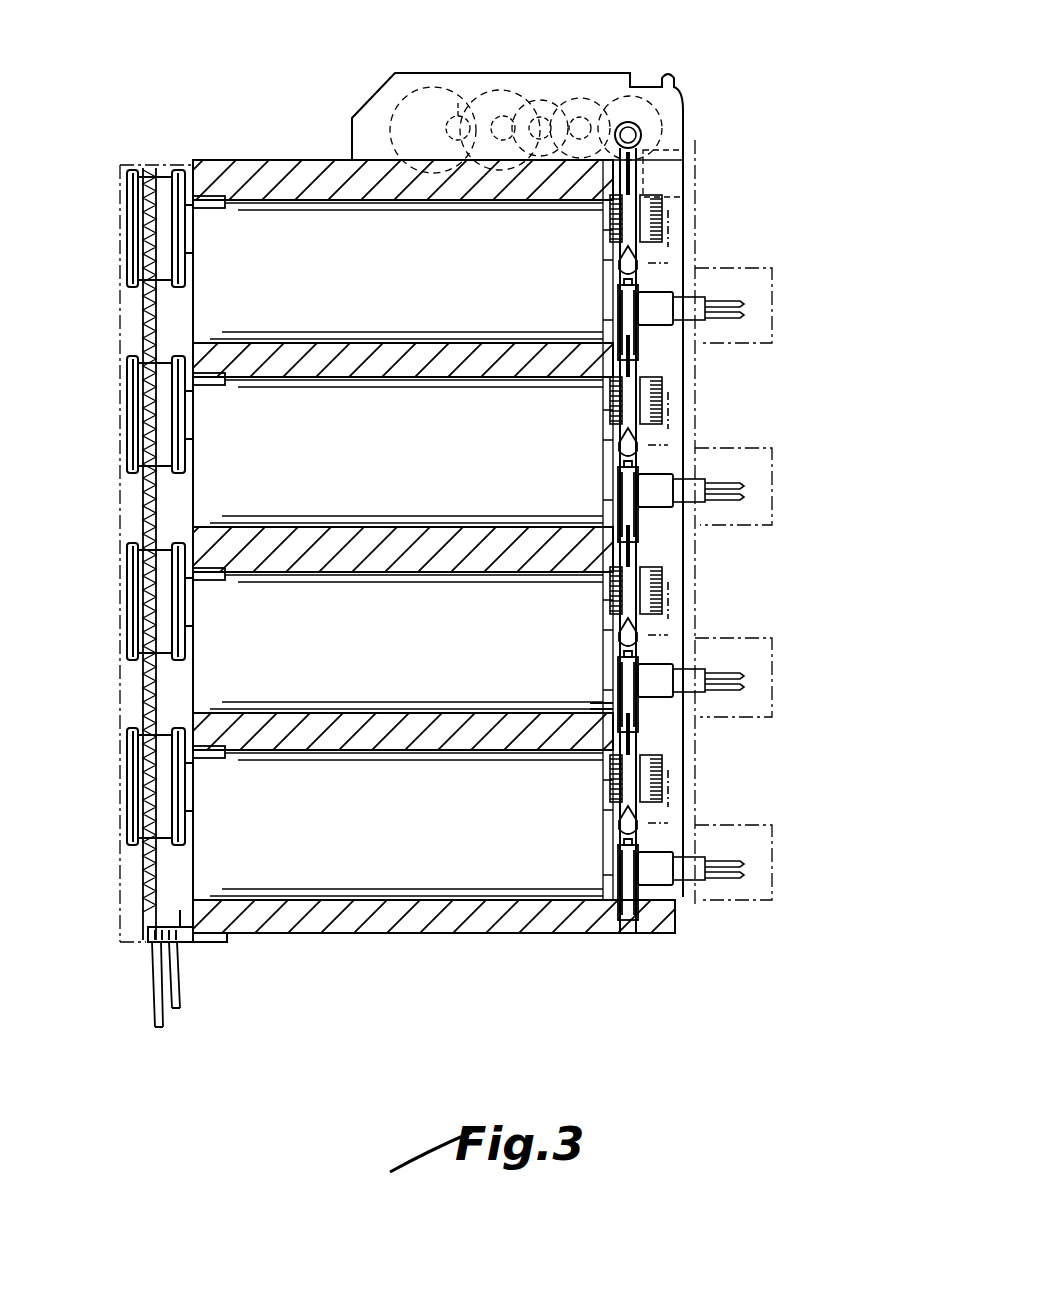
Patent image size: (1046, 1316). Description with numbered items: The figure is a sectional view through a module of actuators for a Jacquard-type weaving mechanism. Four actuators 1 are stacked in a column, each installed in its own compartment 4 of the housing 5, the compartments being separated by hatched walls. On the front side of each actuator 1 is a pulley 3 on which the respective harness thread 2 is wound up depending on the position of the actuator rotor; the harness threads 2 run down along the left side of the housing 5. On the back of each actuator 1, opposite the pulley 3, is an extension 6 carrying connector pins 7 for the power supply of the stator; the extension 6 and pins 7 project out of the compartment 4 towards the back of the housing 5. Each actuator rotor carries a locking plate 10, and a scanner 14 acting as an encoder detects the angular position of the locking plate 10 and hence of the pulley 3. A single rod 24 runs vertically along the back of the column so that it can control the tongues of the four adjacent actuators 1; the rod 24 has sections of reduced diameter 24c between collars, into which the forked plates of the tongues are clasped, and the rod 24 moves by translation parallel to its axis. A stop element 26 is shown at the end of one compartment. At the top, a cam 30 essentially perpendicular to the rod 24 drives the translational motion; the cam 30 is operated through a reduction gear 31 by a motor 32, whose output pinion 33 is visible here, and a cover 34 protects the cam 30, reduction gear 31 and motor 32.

The actuator 1 is at (312, 243).
The harness thread 2 is at (145, 330).
The pulley 3 is at (125, 233).
The compartment 4 is at (359, 204).
The housing 5 is at (356, 957).
The extension 6 is at (655, 315).
The connector pins 7 is at (741, 318).
The locking plate 10 is at (660, 209).
The scanner 14 is at (683, 431).
The rod 24 is at (645, 905).
The section of reduced diameter 24c is at (638, 277).
The stop 26 is at (612, 707).
The cam 30 is at (642, 142).
The reduction gear 31 is at (587, 104).
The motor 32 is at (435, 105).
The output pinion 33 is at (458, 115).
The cover 34 is at (683, 98).